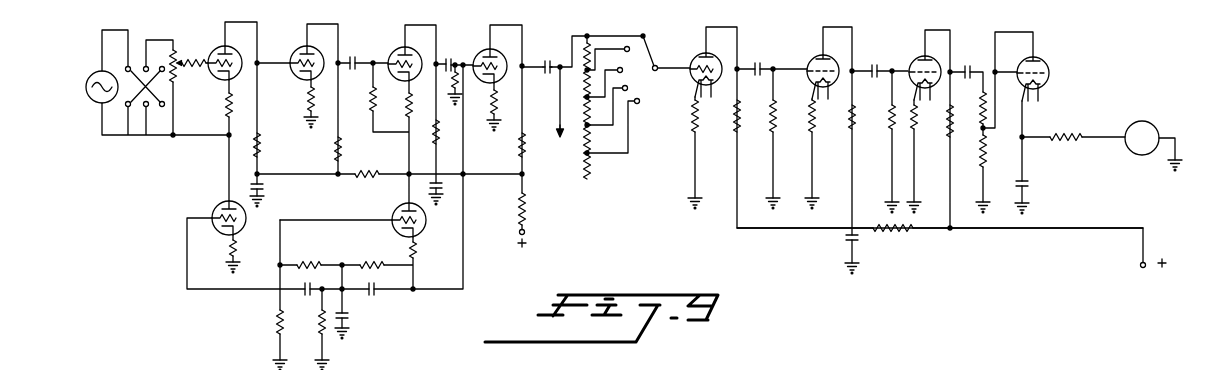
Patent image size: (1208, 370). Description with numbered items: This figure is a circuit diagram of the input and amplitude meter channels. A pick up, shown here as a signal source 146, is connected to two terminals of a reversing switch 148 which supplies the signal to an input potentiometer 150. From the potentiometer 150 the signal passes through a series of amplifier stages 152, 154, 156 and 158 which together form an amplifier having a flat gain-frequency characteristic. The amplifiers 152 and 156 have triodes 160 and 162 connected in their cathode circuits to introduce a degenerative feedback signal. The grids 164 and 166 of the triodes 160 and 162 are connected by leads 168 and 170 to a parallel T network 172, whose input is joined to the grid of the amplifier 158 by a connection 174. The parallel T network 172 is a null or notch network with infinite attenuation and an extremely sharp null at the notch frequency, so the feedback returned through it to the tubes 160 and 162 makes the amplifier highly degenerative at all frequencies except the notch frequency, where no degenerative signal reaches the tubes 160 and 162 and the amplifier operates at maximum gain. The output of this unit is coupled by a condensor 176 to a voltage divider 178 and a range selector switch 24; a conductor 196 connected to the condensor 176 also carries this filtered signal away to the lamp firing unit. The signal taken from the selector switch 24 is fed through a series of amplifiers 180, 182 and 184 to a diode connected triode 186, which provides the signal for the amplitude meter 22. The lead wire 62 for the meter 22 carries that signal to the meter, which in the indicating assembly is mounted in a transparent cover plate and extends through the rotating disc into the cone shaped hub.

The signal source 146 is at (98, 104).
The reversing switch 148 is at (158, 108).
The input potentiometer 150 is at (173, 50).
The amplifier stage 152 is at (240, 52).
The amplifier stage 154 is at (320, 51).
The amplifier stage 156 is at (393, 51).
The amplifier stage 158 is at (480, 53).
The triode 160 is at (220, 205).
The triode 162 is at (398, 209).
The grid 164 is at (245, 230).
The grid 166 is at (395, 229).
The lead 168 is at (185, 246).
The lead 170 is at (317, 219).
The parallel T network 172 is at (267, 307).
The connection 174 is at (464, 231).
The condensor 176 is at (548, 57).
The voltage divider 178 is at (582, 146).
The conductor 196 is at (558, 87).
The range selector switch 24 is at (659, 46).
The amplifier 180 is at (691, 77).
The amplifier 182 is at (817, 57).
The amplifier 184 is at (919, 57).
The diode connected triode 186 is at (1049, 63).
The lead wire 62 is at (1108, 140).
The amplitude meter 22 is at (1145, 127).